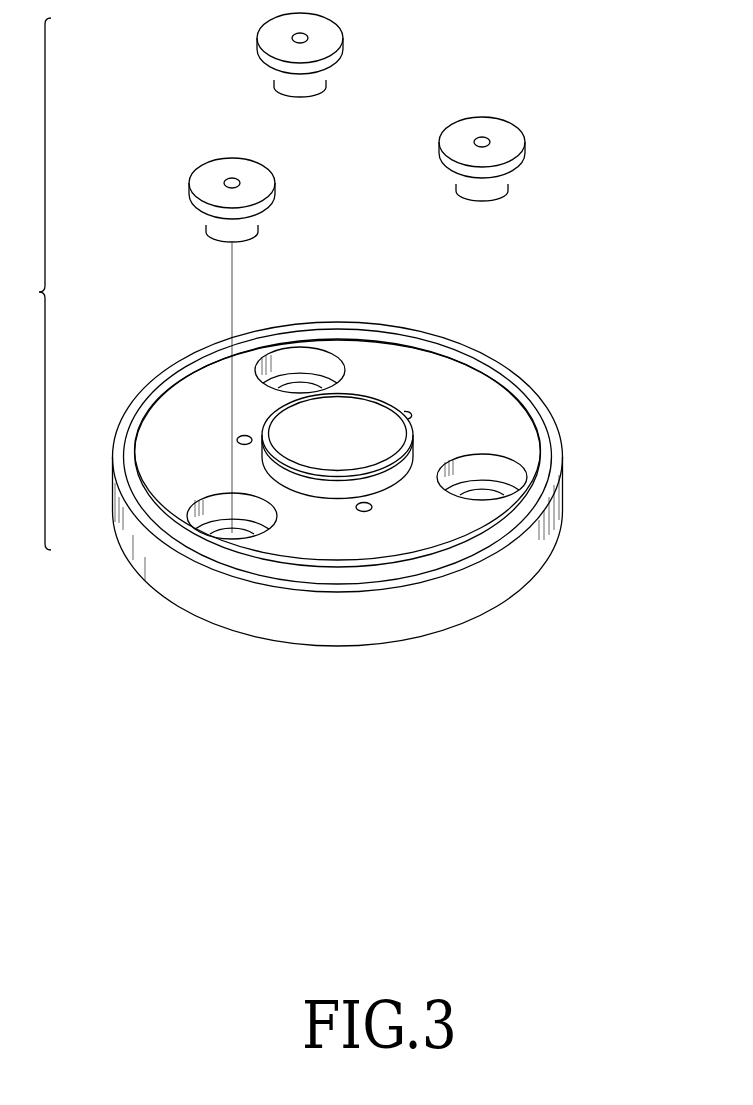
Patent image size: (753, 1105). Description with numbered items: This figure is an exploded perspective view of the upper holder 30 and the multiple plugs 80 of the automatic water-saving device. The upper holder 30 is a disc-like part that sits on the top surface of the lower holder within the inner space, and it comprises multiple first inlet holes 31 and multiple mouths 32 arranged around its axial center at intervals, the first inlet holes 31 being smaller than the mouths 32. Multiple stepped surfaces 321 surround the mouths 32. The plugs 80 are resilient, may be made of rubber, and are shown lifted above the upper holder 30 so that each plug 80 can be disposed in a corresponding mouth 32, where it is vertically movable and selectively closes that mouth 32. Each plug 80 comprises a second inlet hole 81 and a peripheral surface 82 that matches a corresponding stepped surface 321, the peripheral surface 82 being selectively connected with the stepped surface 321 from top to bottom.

The upper holder 30 is at (381, 473).
The first inlet holes 31 is at (364, 503).
The mouths 32 is at (516, 473).
The stepped surfaces 321 is at (473, 481).
The plugs 80 is at (518, 137).
The second inlet hole 81 is at (486, 138).
The peripheral surface 82 is at (520, 167).